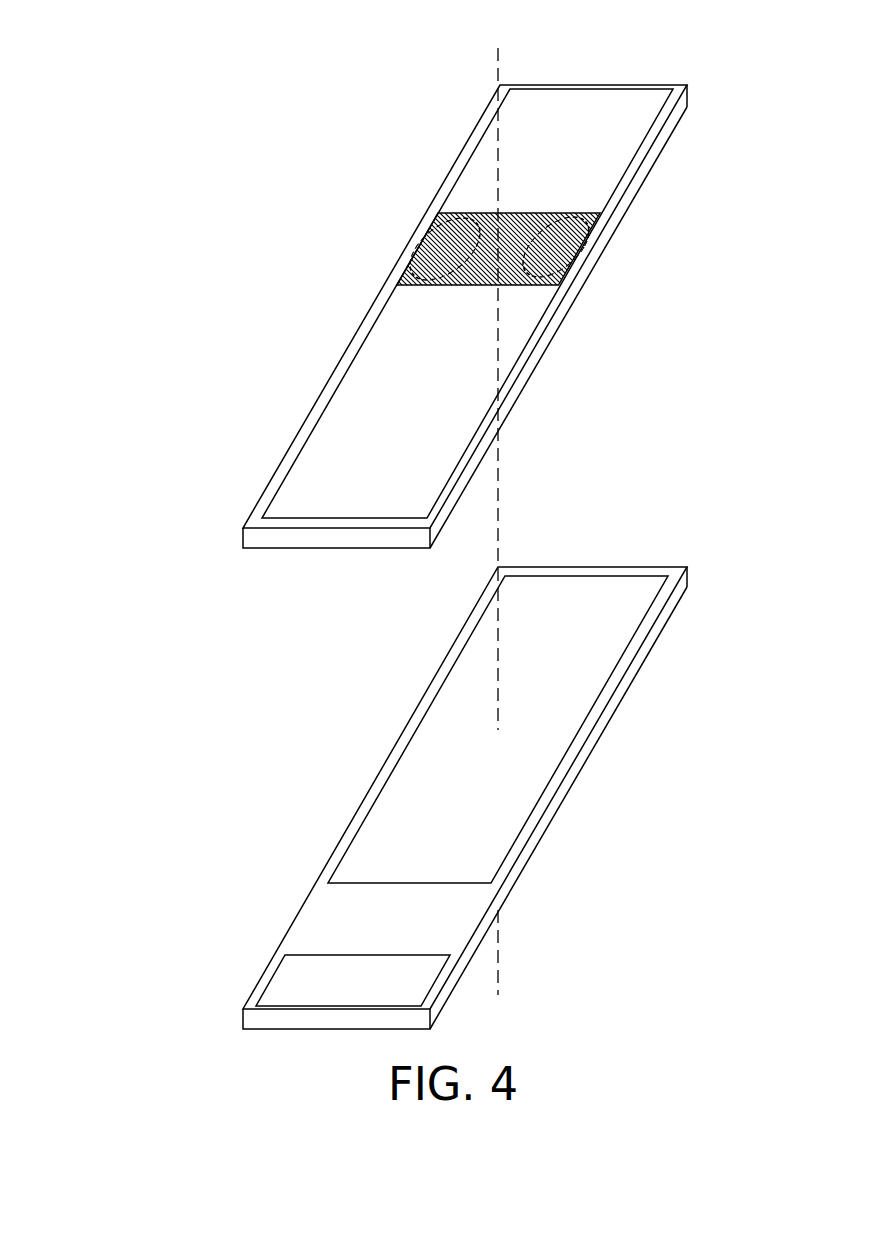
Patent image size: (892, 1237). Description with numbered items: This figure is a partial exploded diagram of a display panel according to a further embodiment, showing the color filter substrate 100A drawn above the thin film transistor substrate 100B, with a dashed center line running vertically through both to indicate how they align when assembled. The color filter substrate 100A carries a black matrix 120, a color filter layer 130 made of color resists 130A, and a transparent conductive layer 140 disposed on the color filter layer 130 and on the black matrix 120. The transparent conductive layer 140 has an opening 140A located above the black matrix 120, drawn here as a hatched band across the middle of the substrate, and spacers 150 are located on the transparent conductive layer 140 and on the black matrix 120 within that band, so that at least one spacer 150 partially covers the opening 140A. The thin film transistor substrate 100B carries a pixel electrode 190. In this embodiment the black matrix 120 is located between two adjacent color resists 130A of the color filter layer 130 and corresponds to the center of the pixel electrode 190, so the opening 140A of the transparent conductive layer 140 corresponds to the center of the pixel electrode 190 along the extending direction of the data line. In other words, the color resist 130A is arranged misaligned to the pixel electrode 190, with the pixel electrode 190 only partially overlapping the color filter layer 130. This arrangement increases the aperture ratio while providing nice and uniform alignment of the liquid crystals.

The color filter substrate 100A is at (497, 290).
The thin film transistor substrate 100B is at (516, 771).
The black matrix 120 is at (465, 207).
The color filter layer 130 is at (480, 172).
The color resist 130A is at (439, 303).
The transparent conductive layer 140 is at (525, 348).
The opening 140A is at (532, 220).
The spacer 150 is at (420, 255).
The pixel electrode 190 is at (550, 716).